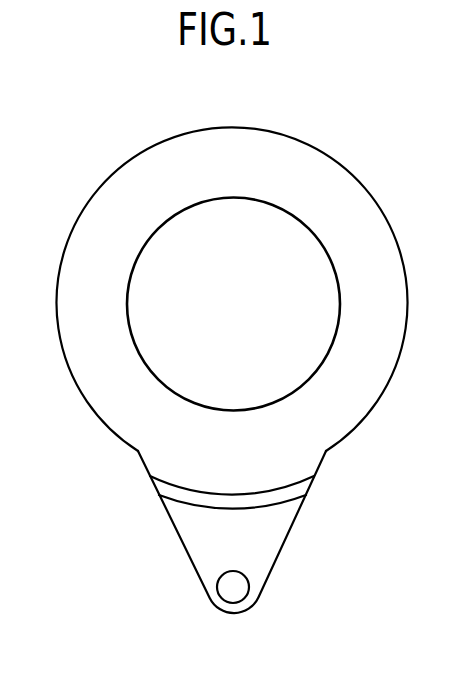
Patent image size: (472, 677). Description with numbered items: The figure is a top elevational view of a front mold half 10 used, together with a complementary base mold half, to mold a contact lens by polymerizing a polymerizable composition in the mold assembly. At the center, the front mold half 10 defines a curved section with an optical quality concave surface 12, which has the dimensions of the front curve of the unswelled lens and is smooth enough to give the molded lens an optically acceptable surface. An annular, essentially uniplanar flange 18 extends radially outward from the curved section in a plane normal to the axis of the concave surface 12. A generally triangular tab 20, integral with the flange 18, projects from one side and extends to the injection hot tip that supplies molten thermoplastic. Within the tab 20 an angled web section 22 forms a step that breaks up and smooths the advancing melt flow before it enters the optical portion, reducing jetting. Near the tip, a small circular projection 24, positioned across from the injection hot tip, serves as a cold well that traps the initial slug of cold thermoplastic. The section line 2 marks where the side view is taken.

The section line 2- 2 is at (234, 78).
The front mold half 10 is at (64, 223).
The optical quality concave surface 12 is at (248, 300).
The annular uniplanar flange 18 is at (348, 221).
The generally triangular tab 20 is at (198, 535).
The angled web section 22 is at (285, 497).
The small circular projection 24 is at (249, 580).